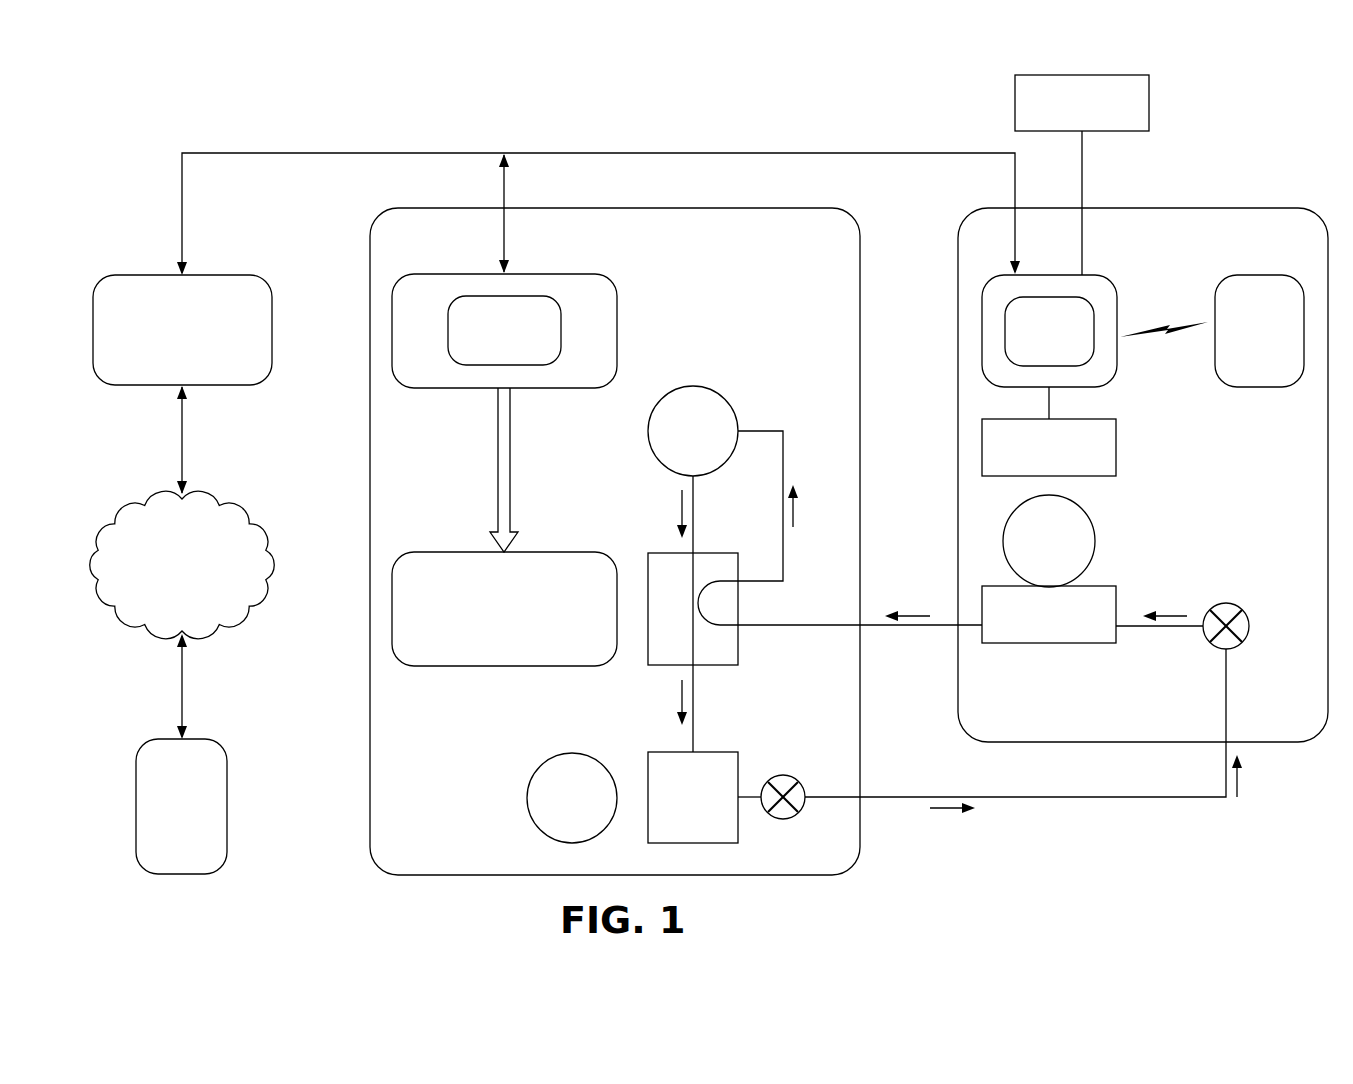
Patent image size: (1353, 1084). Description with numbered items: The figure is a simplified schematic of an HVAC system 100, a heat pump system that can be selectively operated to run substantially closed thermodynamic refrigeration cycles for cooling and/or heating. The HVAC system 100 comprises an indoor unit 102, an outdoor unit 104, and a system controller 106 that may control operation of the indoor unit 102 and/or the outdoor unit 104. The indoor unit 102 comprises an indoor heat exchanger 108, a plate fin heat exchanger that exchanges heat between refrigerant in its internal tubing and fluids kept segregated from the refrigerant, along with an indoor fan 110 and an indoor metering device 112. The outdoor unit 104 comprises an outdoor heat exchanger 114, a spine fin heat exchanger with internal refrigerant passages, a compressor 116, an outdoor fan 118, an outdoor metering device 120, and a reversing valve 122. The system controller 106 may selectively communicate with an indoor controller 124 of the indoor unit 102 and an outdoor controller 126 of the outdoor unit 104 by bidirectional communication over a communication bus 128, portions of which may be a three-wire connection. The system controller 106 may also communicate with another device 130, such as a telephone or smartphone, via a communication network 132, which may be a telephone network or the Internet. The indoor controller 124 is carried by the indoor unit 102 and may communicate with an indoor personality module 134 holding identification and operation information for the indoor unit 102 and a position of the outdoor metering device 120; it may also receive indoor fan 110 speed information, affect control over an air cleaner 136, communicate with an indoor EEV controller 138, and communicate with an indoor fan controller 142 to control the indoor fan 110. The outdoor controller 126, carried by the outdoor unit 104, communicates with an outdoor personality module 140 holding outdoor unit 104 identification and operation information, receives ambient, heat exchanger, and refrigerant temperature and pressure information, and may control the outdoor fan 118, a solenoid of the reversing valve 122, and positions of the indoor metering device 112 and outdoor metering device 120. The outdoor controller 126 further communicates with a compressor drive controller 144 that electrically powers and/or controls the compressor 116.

The HVAC system 100 is at (345, 128).
The indoor unit 102 is at (1231, 206).
The outdoor unit 104 is at (366, 261).
The system controller 106 is at (203, 346).
The indoor heat exchanger 108 is at (1070, 630).
The indoor fan 110 is at (1070, 557).
The indoor metering device 112 is at (1236, 648).
The outdoor heat exchanger 114 is at (714, 813).
The compressor 116 is at (714, 447).
The outdoor fan 118 is at (593, 814).
The outdoor metering device 120 is at (800, 818).
The reversing valve 122 is at (738, 640).
The indoor controller 124 is at (1117, 310).
The outdoor controller 126 is at (448, 274).
The communication bus 128 is at (598, 152).
The other device 130 is at (203, 824).
The communication network 132 is at (203, 581).
The indoor personality module 134 is at (1070, 346).
The air cleaner 136 is at (1103, 119).
The indoor EEV controller 138 is at (1280, 346).
The outdoor personality module 140 is at (525, 346).
The indoor fan controller 142 is at (1070, 463).
The compressor drive controller 144 is at (525, 624).